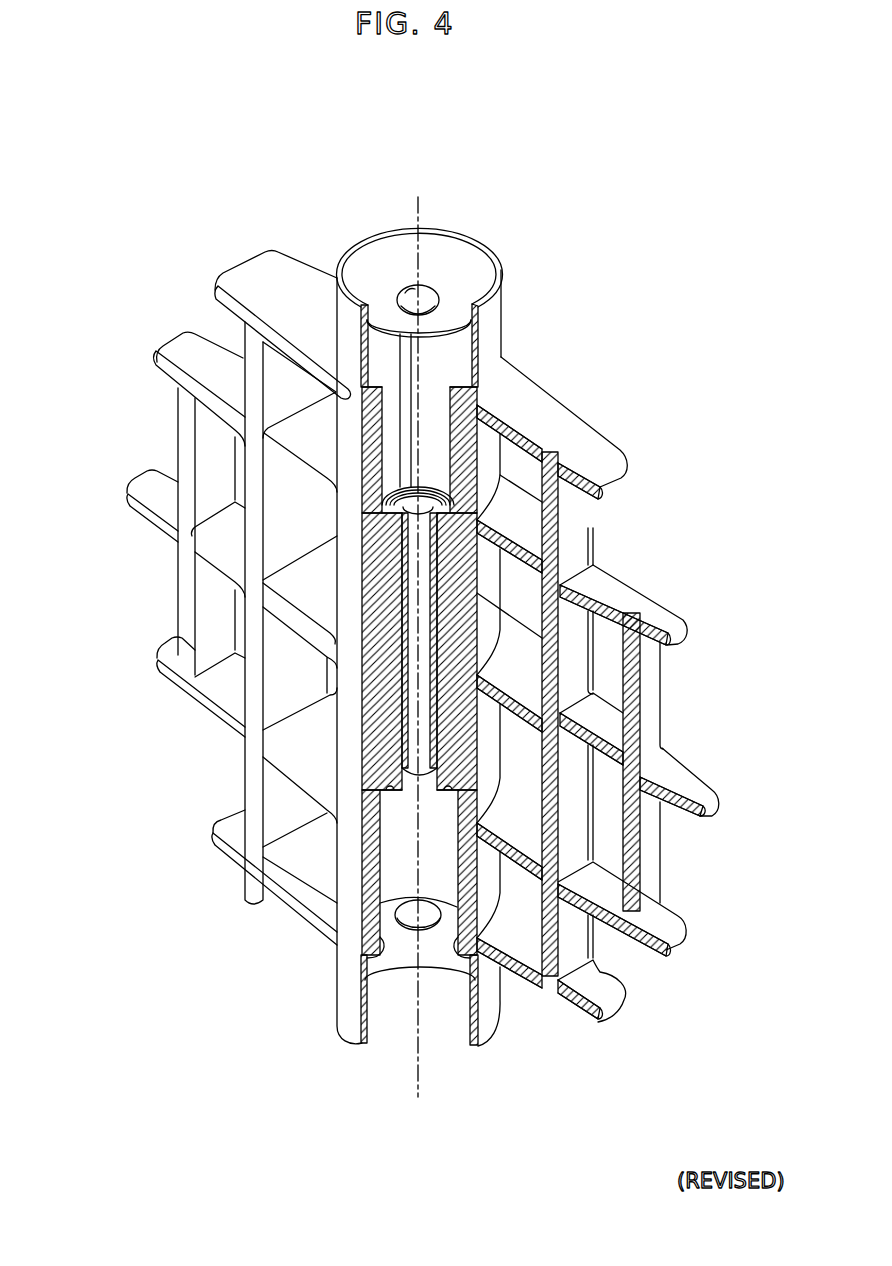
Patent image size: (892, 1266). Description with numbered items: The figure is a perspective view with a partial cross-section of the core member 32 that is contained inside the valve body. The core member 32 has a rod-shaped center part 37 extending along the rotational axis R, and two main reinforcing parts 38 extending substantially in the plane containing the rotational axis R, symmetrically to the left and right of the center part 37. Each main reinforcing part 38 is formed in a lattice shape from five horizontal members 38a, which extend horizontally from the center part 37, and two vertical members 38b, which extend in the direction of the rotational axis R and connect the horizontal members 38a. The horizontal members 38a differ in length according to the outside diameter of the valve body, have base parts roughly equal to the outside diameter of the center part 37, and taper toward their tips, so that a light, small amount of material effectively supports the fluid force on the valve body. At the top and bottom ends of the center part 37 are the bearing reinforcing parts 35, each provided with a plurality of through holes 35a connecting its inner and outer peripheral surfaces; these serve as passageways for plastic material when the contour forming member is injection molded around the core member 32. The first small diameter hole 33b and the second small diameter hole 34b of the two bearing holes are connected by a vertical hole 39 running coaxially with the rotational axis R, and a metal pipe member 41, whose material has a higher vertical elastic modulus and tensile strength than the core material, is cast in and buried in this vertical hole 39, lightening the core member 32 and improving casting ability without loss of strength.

The rotational axis R is at (412, 210).
The core member 32 is at (150, 340).
The first small diameter hole 33b is at (447, 400).
The second small diameter hole 34b is at (386, 945).
The bearing reinforcing part 35 is at (494, 322).
The through hole 35a is at (410, 292).
The center part 37 is at (495, 583).
The main reinforcing part 38 is at (212, 707).
The horizontal member 38a is at (203, 698).
The vertical member 38b is at (253, 775).
The vertical hole 39 is at (440, 493).
The pipe member 41 is at (405, 587).